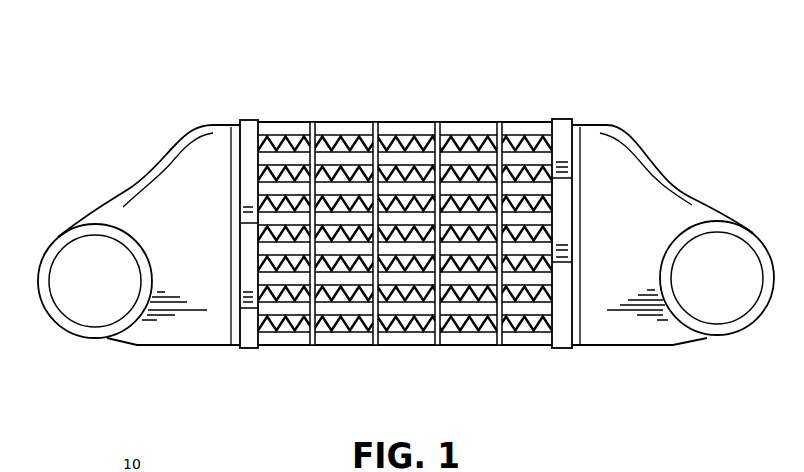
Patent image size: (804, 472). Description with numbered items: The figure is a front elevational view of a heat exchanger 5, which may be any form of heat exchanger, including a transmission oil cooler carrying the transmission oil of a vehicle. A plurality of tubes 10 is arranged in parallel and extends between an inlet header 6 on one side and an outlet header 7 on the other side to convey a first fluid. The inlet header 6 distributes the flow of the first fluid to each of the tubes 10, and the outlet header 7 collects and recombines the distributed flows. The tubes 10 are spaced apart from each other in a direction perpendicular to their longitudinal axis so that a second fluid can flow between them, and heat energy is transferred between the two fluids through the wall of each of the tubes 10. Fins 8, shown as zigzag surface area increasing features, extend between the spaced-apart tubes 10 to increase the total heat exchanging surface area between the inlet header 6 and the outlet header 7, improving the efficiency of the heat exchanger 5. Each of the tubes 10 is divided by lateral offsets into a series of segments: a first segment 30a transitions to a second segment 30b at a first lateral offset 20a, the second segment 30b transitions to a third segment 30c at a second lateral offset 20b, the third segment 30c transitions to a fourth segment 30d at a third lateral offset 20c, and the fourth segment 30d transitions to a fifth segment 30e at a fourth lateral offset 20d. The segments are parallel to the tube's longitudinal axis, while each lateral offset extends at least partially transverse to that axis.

The heat exchanger 5 is at (187, 64).
The inlet header 6 is at (151, 198).
The outlet header 7 is at (663, 178).
The fins 8 is at (340, 322).
The tubes 10 is at (290, 190).
The first lateral offset 20a is at (301, 364).
The second lateral offset 20b is at (372, 364).
The third lateral offset 20c is at (434, 364).
The fourth lateral offset 20d is at (496, 364).
The first segment 30a is at (272, 121).
The second segment 30b is at (344, 122).
The third segment 30c is at (406, 124).
The fourth segment 30d is at (467, 124).
The fifth segment 30e is at (530, 124).